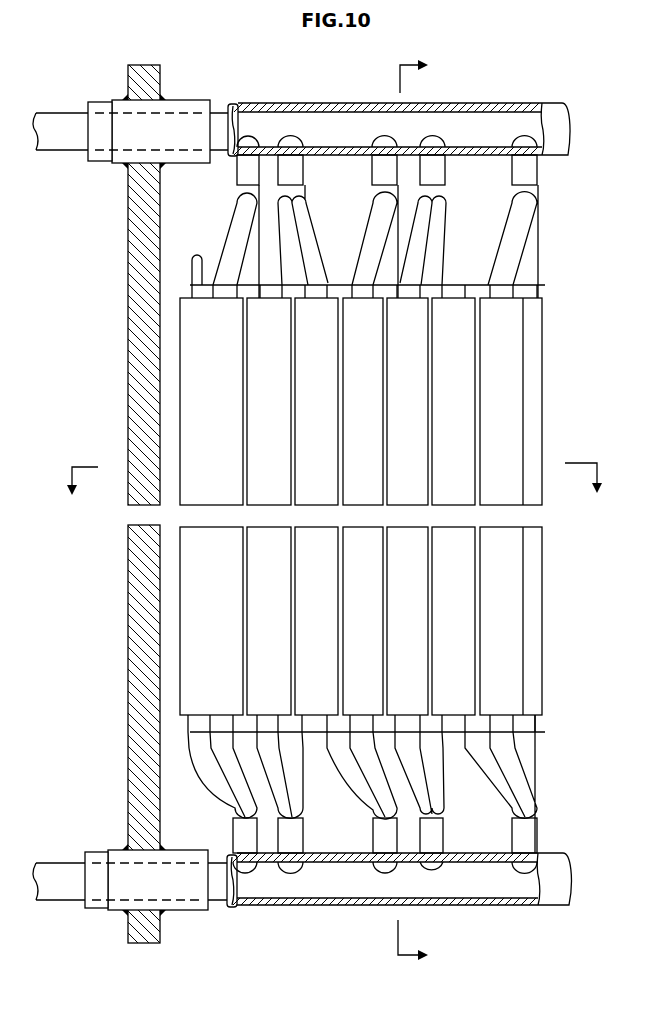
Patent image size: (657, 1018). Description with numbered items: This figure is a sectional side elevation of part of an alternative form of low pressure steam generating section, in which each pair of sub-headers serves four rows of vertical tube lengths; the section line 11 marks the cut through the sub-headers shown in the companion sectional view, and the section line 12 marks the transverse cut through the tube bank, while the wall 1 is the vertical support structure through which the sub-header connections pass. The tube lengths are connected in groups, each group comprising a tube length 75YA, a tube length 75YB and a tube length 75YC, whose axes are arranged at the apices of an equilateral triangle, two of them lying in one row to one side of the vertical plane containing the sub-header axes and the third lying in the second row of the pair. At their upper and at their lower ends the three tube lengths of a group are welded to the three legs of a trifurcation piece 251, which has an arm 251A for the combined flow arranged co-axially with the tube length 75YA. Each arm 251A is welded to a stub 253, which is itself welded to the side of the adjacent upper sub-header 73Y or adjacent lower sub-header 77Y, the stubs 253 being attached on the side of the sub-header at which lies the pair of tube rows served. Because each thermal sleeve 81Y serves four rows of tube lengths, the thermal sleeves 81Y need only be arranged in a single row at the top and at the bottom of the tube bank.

The support wall 1 is at (128, 264).
The thermal sleeve 81Y is at (177, 107).
The upper sub-header 73Y is at (366, 103).
The lower sub-header 77Y is at (465, 906).
The trifurcation piece 251 is at (237, 227).
The arm 251A is at (250, 177).
The stub 253 is at (423, 177).
The tube length 75YA is at (248, 292).
The tube length 75YB is at (263, 290).
The tube length 75YC is at (223, 292).
The section line 11- 11 is at (423, 512).
The section line 12- 12 is at (333, 489).